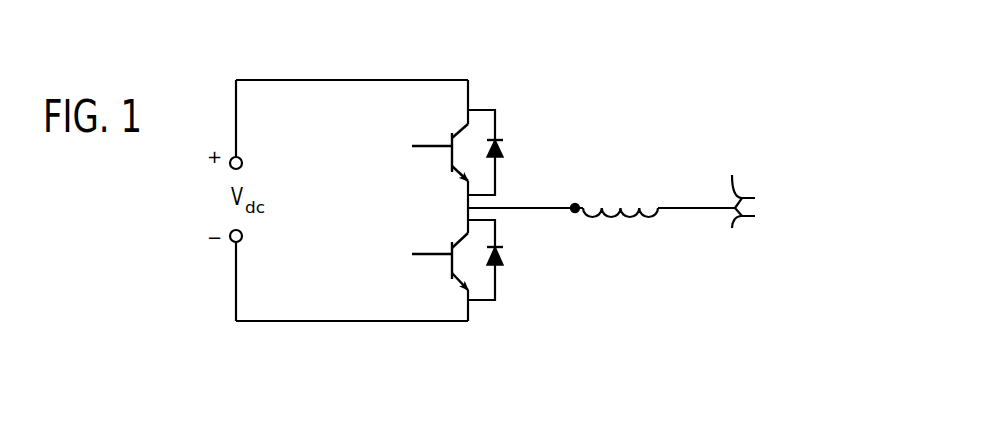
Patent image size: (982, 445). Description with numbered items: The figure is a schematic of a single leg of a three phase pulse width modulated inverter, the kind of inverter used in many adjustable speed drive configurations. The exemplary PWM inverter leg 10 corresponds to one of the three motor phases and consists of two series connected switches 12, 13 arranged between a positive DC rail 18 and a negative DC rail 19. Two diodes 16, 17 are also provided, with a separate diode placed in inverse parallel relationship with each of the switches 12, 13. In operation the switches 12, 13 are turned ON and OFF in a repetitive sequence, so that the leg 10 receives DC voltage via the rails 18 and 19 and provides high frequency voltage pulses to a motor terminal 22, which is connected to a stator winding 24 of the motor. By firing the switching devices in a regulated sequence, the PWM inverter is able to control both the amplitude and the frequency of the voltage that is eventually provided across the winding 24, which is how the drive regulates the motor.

The PWM inverter leg 10 is at (485, 75).
The switch 12 is at (443, 157).
The switch 13 is at (440, 270).
The diode 16 is at (503, 152).
The diode 17 is at (508, 258).
The positive DC rail 18 is at (277, 80).
The negative DC rail 19 is at (310, 322).
The motor terminal 22 is at (576, 206).
The stator winding 24 is at (630, 217).